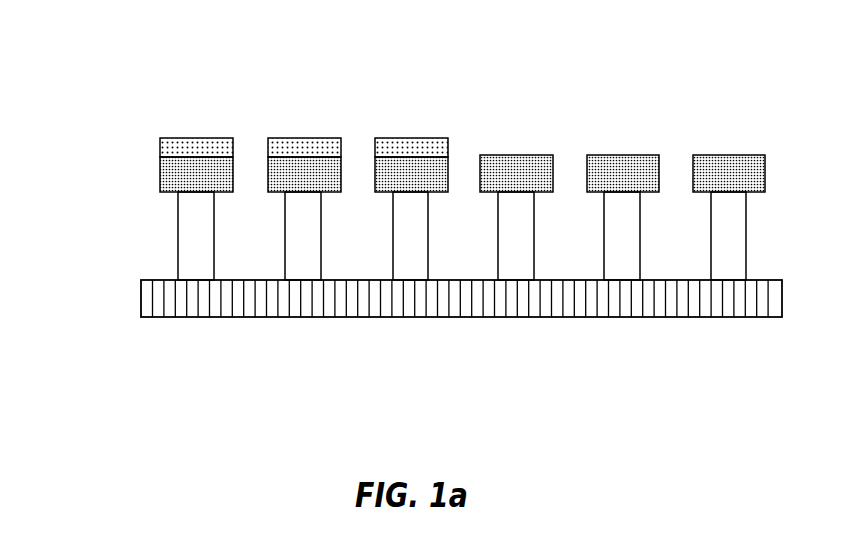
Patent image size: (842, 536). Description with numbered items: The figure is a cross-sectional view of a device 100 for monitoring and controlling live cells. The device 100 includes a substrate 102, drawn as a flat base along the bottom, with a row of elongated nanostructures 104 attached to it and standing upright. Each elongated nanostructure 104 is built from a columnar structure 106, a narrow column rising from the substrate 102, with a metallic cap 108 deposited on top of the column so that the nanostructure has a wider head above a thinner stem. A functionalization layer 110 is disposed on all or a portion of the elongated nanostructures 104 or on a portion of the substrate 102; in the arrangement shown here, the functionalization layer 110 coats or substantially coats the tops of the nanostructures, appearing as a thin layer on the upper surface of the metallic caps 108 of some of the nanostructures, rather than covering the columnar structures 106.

The device 100 is at (66, 46).
The substrate 102 is at (248, 317).
The elongated nanostructure 104 is at (138, 158).
The columnar structure 106 is at (321, 245).
The metallic cap 108 is at (268, 177).
The functionalization layer 110 is at (308, 138).